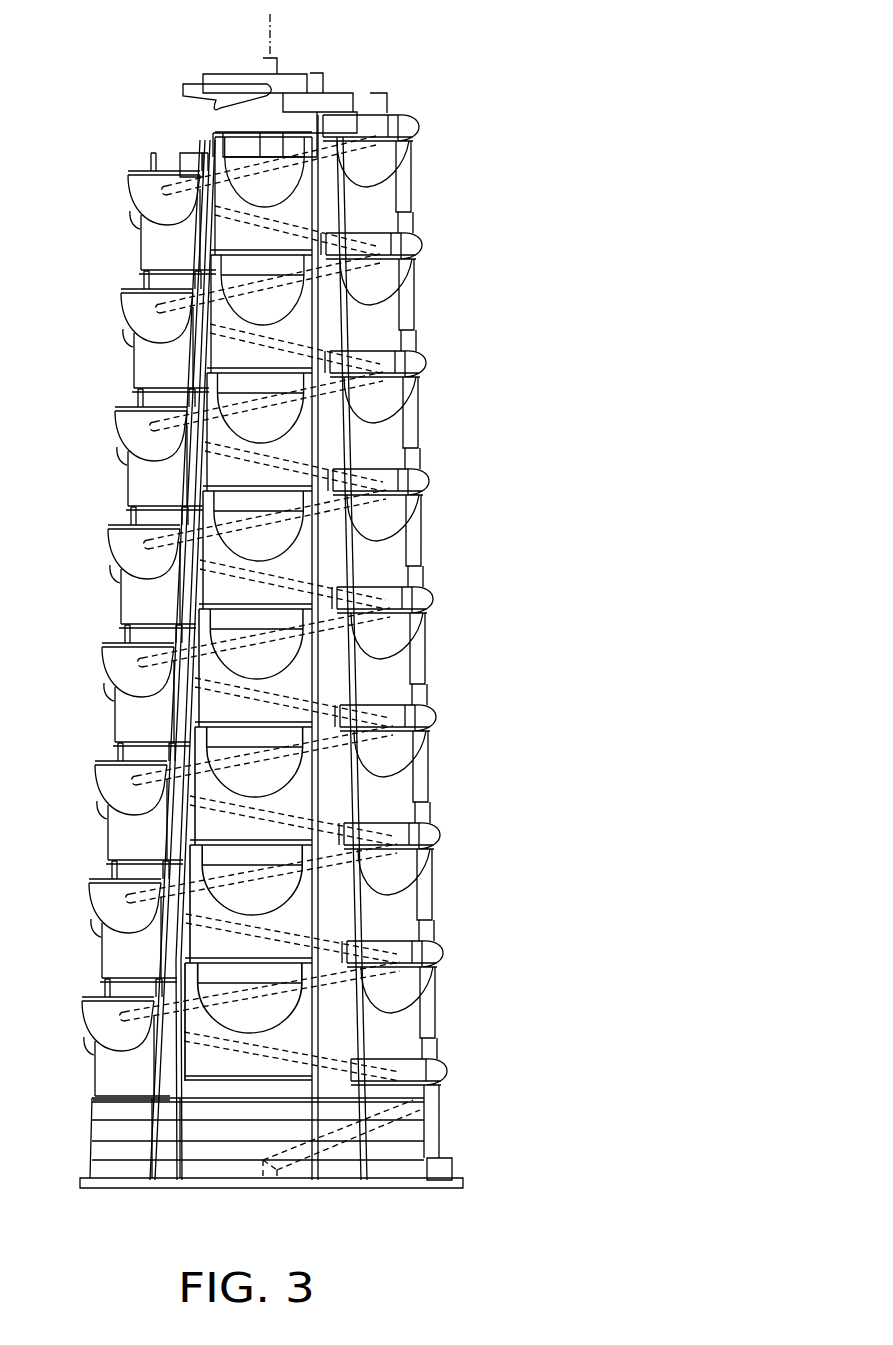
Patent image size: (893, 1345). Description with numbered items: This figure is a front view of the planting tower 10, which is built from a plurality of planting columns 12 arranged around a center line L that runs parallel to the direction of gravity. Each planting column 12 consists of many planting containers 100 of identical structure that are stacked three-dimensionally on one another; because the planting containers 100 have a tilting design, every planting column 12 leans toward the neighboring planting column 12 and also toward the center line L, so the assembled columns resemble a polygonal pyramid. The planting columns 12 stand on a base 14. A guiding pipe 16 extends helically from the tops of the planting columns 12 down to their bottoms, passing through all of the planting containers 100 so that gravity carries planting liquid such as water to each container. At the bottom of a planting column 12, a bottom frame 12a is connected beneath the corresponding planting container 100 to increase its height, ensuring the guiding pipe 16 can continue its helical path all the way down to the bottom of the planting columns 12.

The planting tower 10 is at (520, 122).
The planting column 12 is at (305, 64).
The bottom frame 12a is at (442, 1173).
The base 14 is at (445, 1186).
The guiding pipe 16 is at (241, 84).
The planting container 100 is at (385, 207).
The center line L is at (272, 50).